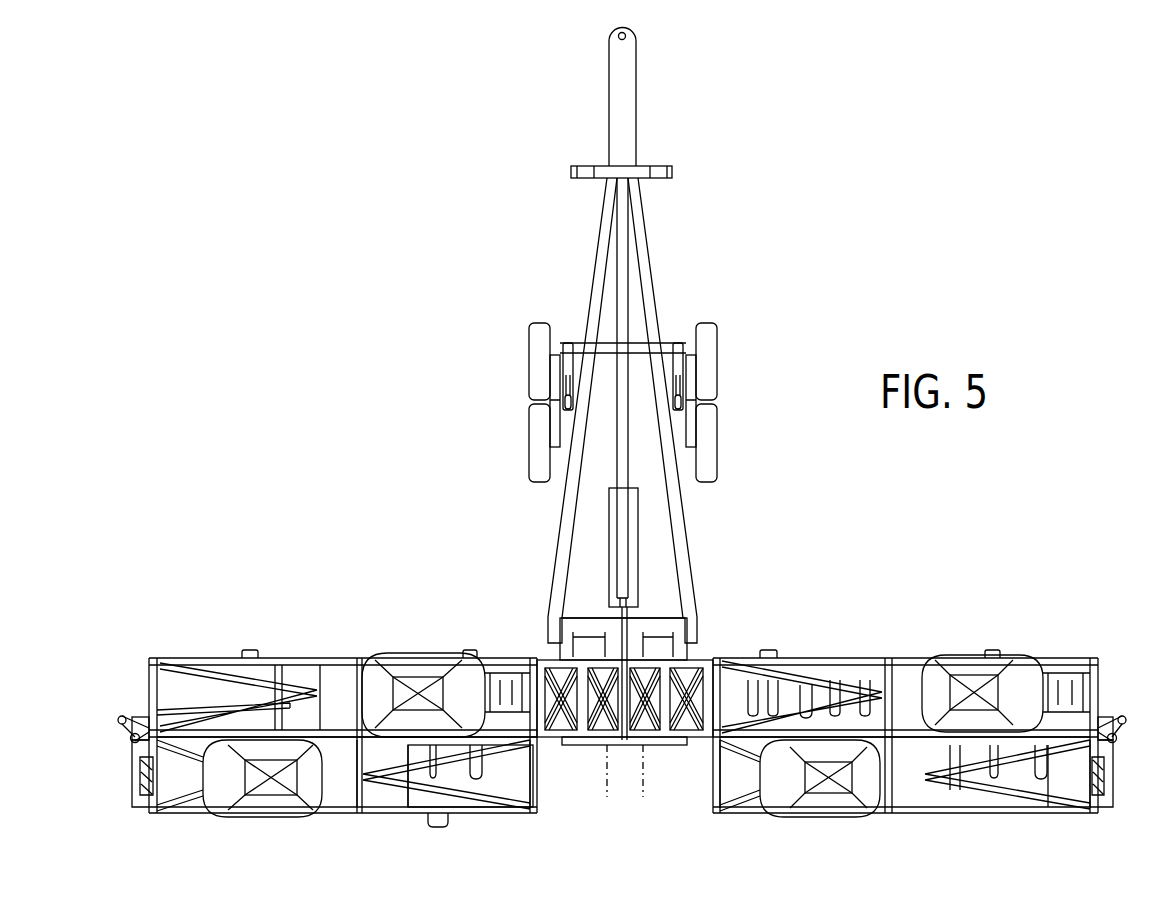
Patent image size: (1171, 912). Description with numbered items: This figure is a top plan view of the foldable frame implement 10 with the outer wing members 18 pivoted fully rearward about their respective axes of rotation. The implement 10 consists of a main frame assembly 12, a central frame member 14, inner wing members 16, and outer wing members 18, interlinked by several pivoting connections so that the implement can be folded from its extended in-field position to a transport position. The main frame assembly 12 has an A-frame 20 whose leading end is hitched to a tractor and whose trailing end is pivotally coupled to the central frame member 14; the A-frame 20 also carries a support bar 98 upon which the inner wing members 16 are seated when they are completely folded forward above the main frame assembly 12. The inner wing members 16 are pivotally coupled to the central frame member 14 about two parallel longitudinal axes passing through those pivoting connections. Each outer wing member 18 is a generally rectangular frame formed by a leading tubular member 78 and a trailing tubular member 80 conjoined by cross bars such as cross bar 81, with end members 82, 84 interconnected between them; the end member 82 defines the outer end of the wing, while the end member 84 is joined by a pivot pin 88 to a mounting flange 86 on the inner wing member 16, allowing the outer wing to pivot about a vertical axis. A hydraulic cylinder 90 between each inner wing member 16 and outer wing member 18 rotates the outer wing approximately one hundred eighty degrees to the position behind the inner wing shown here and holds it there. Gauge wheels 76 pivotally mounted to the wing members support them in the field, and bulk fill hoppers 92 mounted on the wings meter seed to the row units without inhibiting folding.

The foldable frame implement 10 is at (836, 258).
The main frame assembly 12 is at (547, 113).
The central frame member 14 is at (579, 752).
The inner wing members 16 is at (306, 637).
The outer wing members 18 is at (341, 821).
The A-frame 20 is at (652, 274).
The gauge wheels 76 is at (440, 825).
The leading tubular member 78 is at (397, 735).
The trailing tubular member 80 is at (375, 813).
The cross bar 81 is at (405, 800).
The end member 82 is at (540, 795).
The end member 84 is at (132, 790).
The mounting flange 86 is at (138, 730).
The pivot pin 88 is at (133, 740).
The hydraulic cylinder 90 is at (208, 700).
The bulk fill hoppers 92 is at (437, 660).
The support bar 98 is at (640, 170).